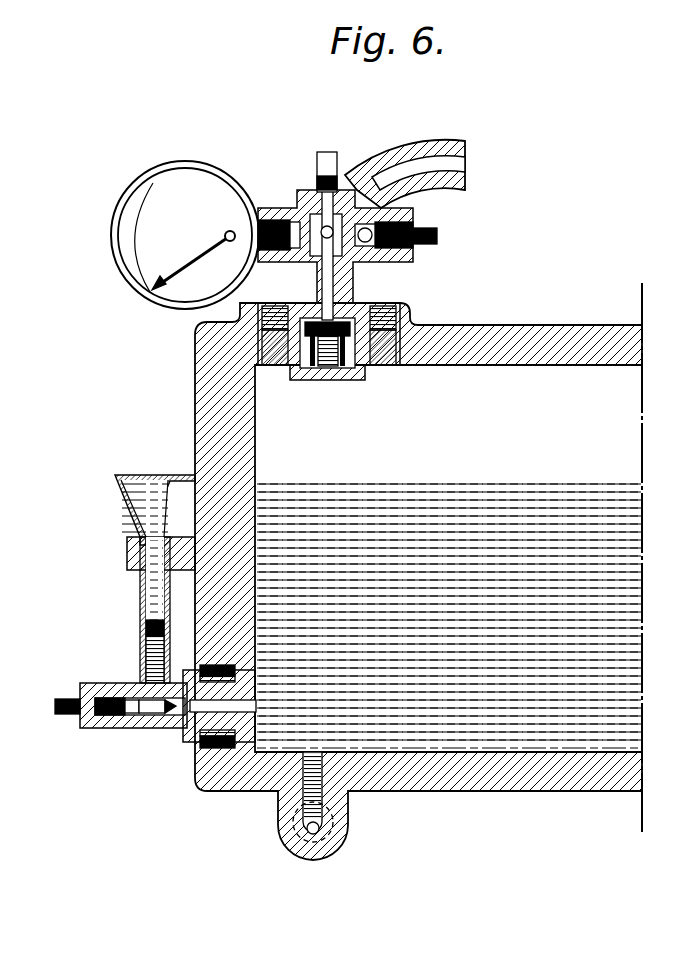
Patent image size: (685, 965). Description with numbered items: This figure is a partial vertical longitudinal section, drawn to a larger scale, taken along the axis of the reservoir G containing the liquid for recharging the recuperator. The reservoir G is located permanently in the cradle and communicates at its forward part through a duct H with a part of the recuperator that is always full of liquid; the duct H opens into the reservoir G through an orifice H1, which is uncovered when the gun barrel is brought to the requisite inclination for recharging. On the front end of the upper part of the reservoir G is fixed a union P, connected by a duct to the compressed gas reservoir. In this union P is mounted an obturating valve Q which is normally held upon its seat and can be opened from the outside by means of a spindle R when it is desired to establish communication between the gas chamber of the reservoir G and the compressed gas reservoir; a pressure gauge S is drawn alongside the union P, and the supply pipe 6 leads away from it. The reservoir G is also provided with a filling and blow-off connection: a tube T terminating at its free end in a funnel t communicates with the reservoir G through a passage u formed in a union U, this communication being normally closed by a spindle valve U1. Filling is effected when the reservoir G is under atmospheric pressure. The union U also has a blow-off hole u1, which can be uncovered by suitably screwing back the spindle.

The supply pipe 6 is at (455, 162).
The spindle R is at (322, 186).
The pressure gauge S is at (150, 256).
The union P is at (352, 285).
The reservoir G is at (511, 380).
The obturating valve Q is at (307, 362).
The funnel t is at (142, 484).
The tube T is at (143, 596).
The union U is at (160, 730).
The spindle valve U1 is at (135, 700).
The passage u is at (178, 732).
The blow-off hole u1 is at (127, 730).
The orifice H1 is at (303, 793).
The duct H is at (316, 832).